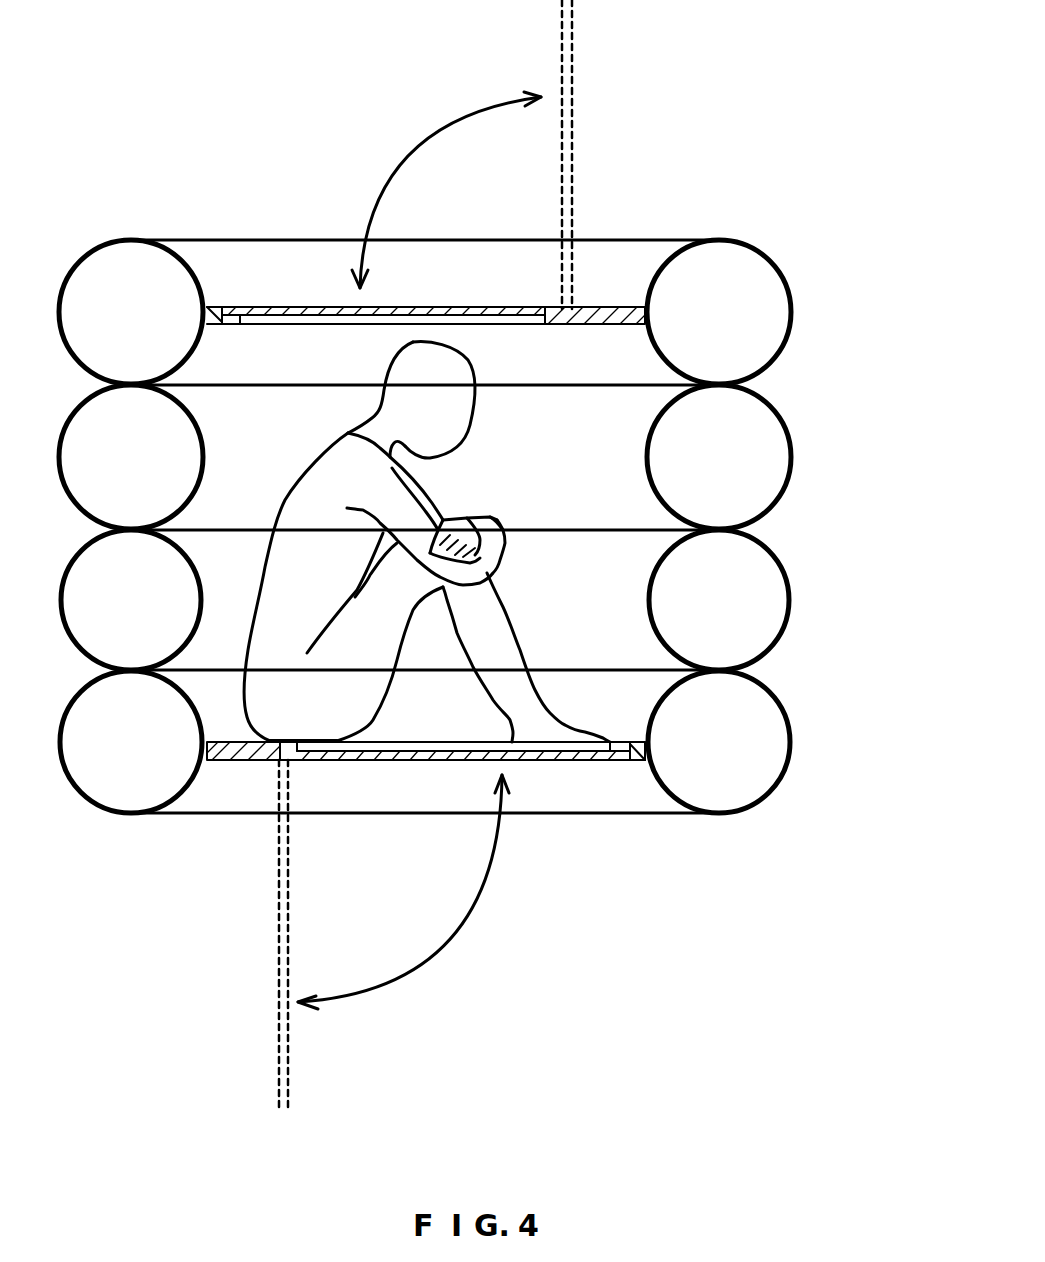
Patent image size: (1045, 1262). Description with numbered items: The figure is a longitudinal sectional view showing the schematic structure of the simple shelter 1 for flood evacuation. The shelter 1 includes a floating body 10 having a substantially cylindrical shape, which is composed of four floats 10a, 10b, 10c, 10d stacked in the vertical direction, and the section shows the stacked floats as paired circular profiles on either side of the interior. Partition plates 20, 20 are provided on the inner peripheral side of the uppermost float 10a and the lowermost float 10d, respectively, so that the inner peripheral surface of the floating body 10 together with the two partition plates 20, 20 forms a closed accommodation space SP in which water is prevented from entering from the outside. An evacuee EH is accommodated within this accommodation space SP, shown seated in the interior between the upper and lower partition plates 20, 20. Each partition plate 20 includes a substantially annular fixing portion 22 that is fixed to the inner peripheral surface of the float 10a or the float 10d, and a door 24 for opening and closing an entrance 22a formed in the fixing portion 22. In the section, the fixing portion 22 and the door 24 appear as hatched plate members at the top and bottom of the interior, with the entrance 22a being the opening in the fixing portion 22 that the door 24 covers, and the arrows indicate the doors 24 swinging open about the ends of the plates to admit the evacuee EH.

The shelter 1 is at (780, 130).
The floating body 10 is at (491, 489).
The uppermost float 10a is at (792, 316).
The float 10b is at (784, 413).
The float 10c is at (788, 578).
The lowermost float 10d is at (789, 722).
The partition plate 20 is at (403, 538).
The fixing portion 22 is at (586, 325).
The entrance 22a is at (356, 322).
The door 24 is at (258, 308).
The evacuee EH is at (438, 497).
The accommodation space SP is at (600, 493).